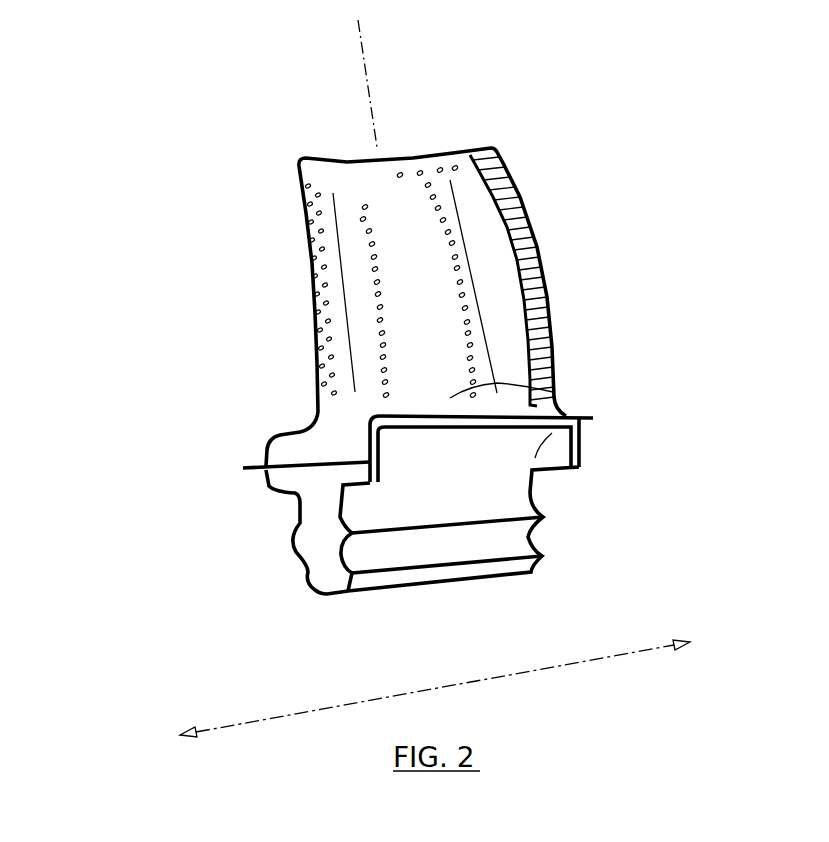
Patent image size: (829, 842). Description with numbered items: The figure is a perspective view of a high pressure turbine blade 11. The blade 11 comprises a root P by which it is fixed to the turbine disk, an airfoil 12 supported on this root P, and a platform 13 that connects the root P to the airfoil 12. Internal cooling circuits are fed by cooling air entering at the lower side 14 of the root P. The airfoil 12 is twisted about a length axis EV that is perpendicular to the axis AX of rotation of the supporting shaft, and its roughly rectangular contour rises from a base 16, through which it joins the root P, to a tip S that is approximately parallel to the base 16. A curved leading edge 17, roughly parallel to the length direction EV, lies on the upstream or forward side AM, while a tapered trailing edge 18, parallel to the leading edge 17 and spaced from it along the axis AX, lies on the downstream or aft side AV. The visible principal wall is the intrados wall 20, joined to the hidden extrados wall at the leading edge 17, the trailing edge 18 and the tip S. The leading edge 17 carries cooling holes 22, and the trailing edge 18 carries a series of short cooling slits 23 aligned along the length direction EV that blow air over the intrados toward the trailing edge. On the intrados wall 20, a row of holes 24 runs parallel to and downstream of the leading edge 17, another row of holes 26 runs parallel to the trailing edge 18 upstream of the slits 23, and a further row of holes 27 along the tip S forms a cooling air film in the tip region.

The blade 11 is at (140, 352).
The airfoil 12 is at (557, 140).
The platform 13 is at (593, 418).
The lower side of the root 14 is at (427, 604).
The base 16 is at (553, 390).
The leading edge 17 is at (300, 220).
The trailing edge 18 is at (518, 200).
The intrados wall 20 is at (447, 286).
The cooling holes 22 is at (323, 368).
The cooling slits 23 is at (550, 363).
The holes 24 is at (370, 230).
The holes 26 is at (472, 383).
The holes 27 is at (400, 170).
The length axis EV is at (362, 48).
The tip S is at (367, 161).
The root P is at (457, 494).
The axis of rotation AX is at (300, 707).
The upstream or forward side AM is at (222, 727).
The downstream or aft side AV is at (645, 653).